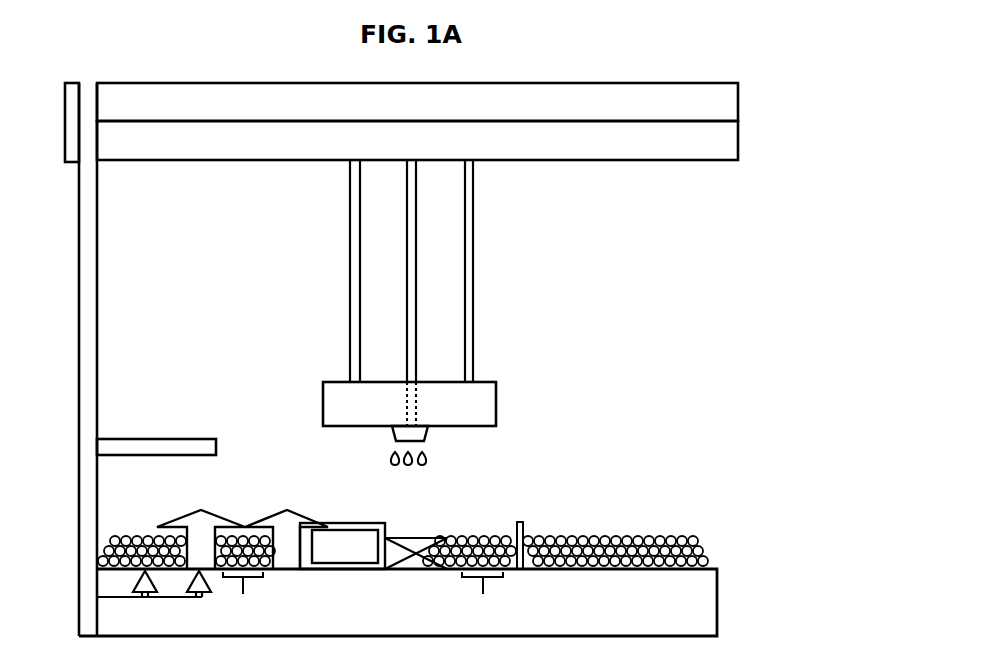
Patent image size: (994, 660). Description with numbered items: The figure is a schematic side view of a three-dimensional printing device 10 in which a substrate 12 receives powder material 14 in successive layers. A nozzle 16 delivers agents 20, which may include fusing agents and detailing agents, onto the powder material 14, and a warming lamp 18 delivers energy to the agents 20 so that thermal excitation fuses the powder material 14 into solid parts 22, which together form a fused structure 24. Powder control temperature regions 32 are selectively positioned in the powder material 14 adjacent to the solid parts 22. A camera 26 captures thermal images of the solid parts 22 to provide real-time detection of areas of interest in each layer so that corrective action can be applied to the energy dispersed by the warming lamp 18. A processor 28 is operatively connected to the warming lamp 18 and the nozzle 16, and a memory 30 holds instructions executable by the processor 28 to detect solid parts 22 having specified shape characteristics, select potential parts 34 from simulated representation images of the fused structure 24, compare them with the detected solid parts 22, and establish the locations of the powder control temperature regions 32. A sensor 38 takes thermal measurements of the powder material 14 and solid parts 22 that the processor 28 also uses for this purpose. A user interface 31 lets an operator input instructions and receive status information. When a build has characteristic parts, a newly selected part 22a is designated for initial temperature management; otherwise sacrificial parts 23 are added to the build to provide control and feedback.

The 3D printing device 10 is at (899, 122).
The substrate 12 is at (752, 572).
The powder material 14 is at (708, 551).
The nozzle 16 is at (392, 437).
The warming lamp 18 is at (496, 400).
The agents 20 is at (430, 458).
The solid parts 22 is at (418, 536).
The newly selected part 22a is at (309, 526).
The sacrificial parts 23 is at (520, 522).
The fused structure 24 is at (358, 572).
The camera 26 is at (129, 439).
The processor 28 is at (738, 142).
The memory 30 is at (738, 103).
The user interface 31 is at (65, 107).
The powder control temperature regions 32 is at (363, 595).
The potential parts 34 is at (203, 518).
The sensor 38 is at (175, 597).